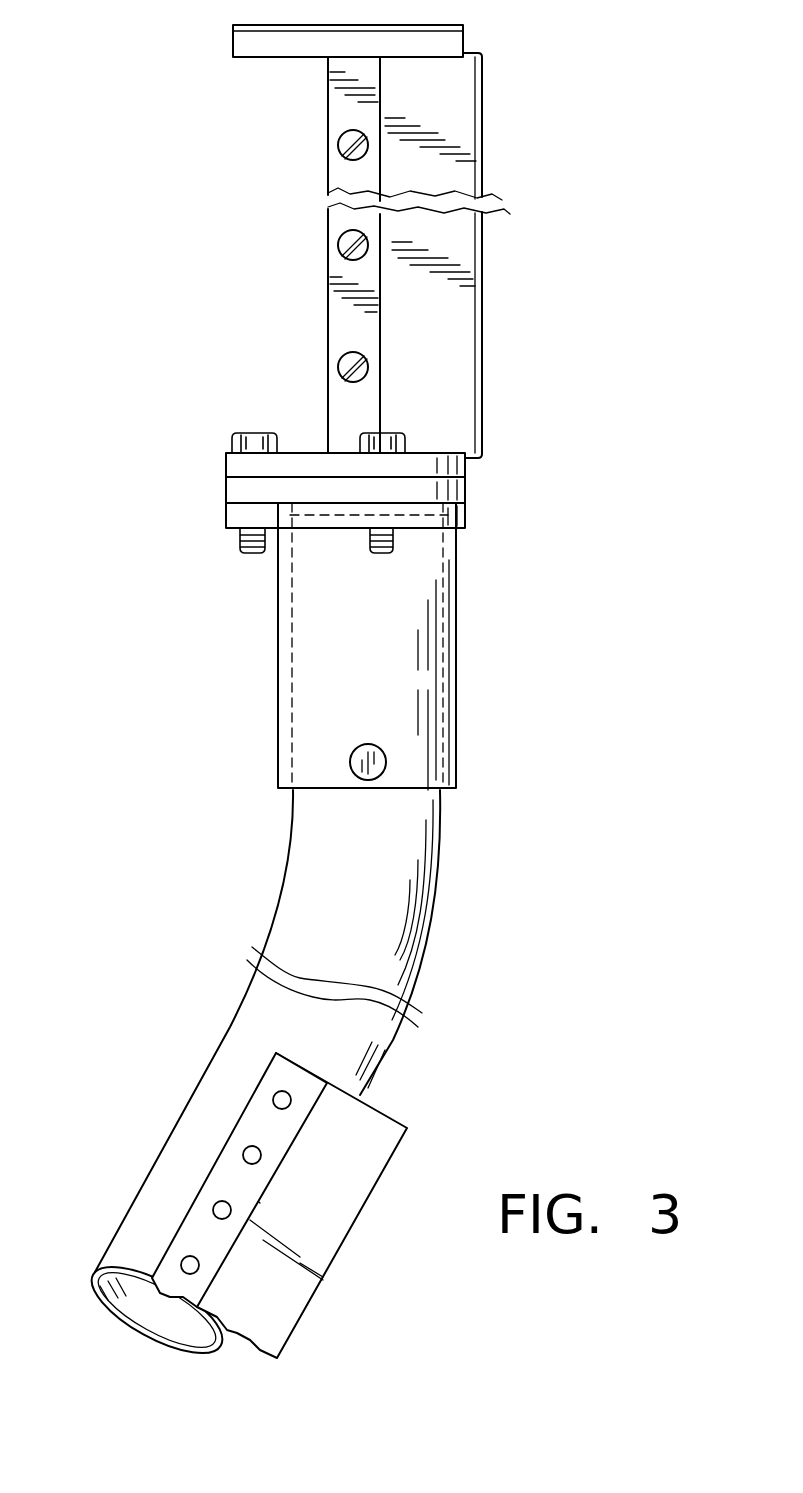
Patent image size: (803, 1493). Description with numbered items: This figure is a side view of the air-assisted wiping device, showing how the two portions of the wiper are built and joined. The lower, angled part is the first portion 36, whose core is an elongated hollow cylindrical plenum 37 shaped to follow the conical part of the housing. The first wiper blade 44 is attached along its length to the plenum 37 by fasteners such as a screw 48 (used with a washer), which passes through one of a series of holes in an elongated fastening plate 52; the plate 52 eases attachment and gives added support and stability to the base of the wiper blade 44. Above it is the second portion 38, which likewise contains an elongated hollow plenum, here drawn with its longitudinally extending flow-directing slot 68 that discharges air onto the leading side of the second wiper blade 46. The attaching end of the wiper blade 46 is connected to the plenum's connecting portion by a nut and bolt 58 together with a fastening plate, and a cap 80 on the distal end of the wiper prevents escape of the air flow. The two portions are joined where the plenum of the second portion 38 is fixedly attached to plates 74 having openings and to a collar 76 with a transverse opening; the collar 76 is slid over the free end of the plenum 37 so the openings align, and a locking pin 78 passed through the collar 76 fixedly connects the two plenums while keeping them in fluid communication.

The first portion 36 is at (150, 1205).
The elongated hollow cylindrical plenum 37 is at (210, 1093).
The second portion 38 is at (500, 286).
The first wiper blade 44 is at (338, 1223).
The second wiper blade 46 is at (463, 89).
The screw 48 is at (262, 1152).
The elongated fastening plate 52 is at (220, 1247).
The bolt 58 is at (337, 366).
The flow-directing slot 68 is at (316, 320).
The plates 74 is at (492, 492).
The collar 76 is at (322, 673).
The locking pin 78 is at (350, 762).
The cap 80 is at (283, 58).